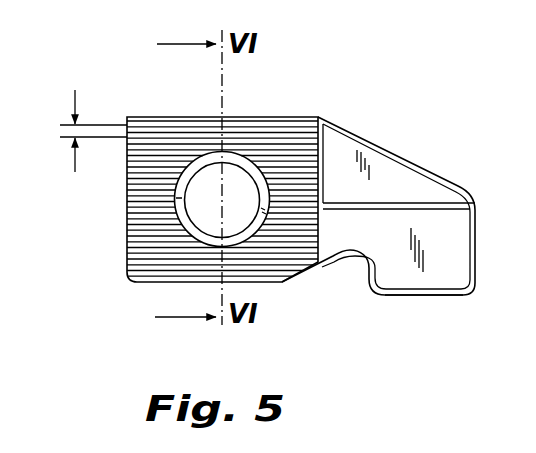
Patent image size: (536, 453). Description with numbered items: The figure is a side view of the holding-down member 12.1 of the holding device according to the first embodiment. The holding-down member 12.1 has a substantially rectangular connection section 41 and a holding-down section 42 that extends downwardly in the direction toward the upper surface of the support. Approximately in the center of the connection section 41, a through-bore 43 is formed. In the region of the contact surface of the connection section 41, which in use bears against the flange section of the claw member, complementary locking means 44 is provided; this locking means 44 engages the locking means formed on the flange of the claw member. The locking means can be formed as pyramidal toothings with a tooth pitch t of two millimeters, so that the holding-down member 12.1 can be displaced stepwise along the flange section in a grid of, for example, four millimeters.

The connection section 41 is at (148, 113).
The complementary locking means 44 is at (195, 130).
The through-bore 43 is at (234, 175).
The holding-down member 12.1 is at (424, 116).
The holding-down section 42 is at (430, 300).
The tooth pitch t is at (74, 131).